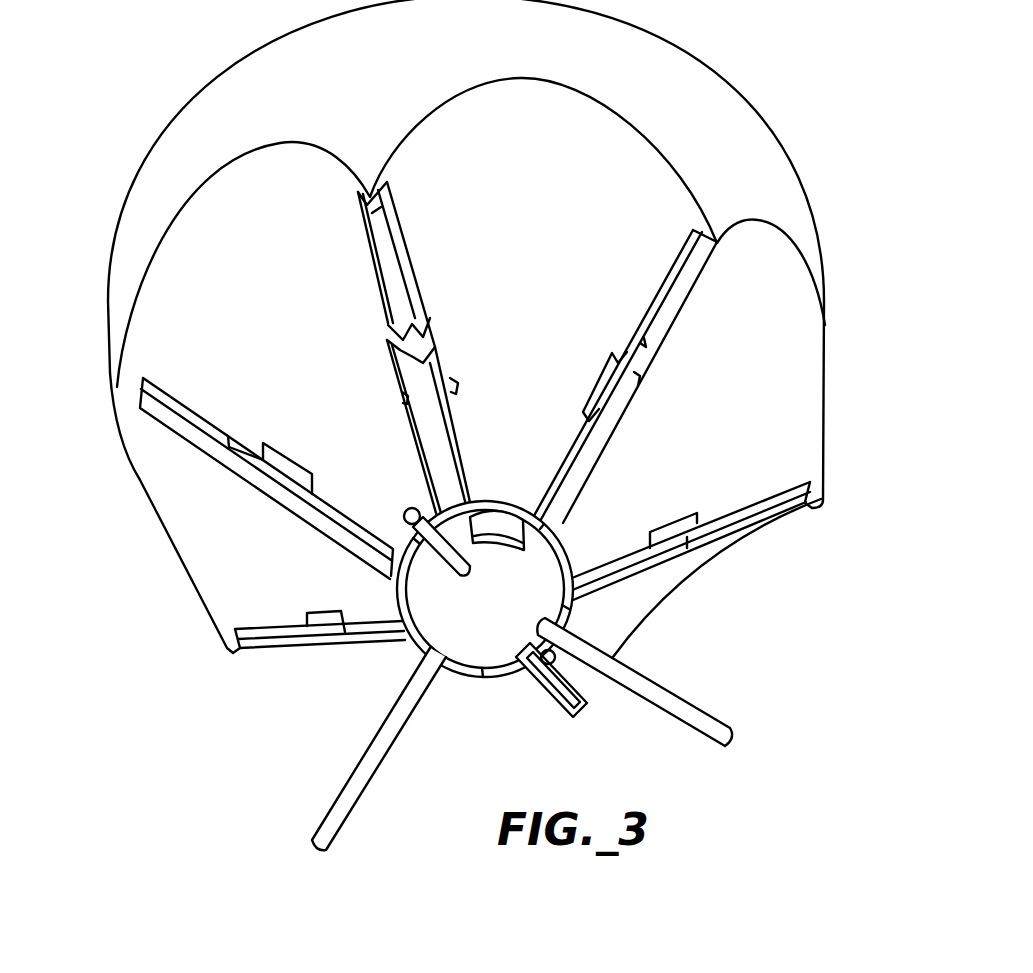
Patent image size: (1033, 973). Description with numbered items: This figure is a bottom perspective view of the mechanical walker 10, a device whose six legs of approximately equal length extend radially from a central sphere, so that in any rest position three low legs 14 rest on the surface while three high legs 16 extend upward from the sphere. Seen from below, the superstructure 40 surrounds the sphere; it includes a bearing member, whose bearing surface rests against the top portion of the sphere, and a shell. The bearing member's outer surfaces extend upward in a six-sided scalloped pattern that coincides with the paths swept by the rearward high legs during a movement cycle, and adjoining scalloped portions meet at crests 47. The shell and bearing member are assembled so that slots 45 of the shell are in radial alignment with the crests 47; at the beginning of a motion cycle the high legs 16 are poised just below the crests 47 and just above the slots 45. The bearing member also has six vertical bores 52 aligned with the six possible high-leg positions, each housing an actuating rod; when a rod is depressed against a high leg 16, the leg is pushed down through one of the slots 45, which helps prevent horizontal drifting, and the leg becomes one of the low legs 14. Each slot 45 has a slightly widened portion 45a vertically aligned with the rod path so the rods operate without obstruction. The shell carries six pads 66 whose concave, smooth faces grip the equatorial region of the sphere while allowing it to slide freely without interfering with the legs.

The mechanical walker 10 is at (446, 328).
The superstructure 40 is at (131, 178).
The slots 45 is at (410, 258).
The crests 47 is at (398, 213).
The vertical bores 52 is at (436, 329).
The widened portion 45a is at (455, 393).
The high legs 16 is at (240, 442).
The pads 66 is at (570, 560).
The low legs 14 is at (699, 716).